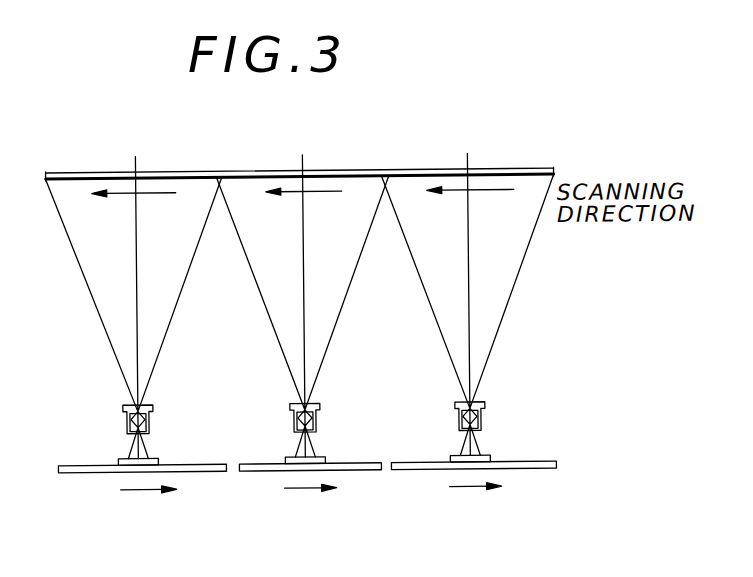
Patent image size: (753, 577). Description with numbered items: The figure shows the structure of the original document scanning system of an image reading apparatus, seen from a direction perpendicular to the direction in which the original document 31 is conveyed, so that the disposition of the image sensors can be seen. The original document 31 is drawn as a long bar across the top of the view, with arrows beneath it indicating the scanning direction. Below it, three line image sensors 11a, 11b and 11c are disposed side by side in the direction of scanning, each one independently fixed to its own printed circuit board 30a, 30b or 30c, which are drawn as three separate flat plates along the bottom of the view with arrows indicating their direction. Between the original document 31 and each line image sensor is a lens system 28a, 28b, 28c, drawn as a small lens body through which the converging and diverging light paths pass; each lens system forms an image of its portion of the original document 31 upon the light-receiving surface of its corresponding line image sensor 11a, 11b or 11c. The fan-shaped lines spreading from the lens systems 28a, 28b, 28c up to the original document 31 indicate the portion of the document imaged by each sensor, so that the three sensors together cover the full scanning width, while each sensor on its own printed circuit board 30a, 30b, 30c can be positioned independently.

The original document 31 is at (491, 170).
The imaging lens 28a is at (155, 421).
The imaging lens 28b is at (321, 418).
The imaging lens 28c is at (487, 418).
The line image sensor 11a is at (160, 460).
The line image sensor 11b is at (327, 459).
The line image sensor 11c is at (490, 458).
The printed circuit board 30a is at (206, 472).
The printed circuit board 30b is at (370, 472).
The printed circuit board 30c is at (533, 472).